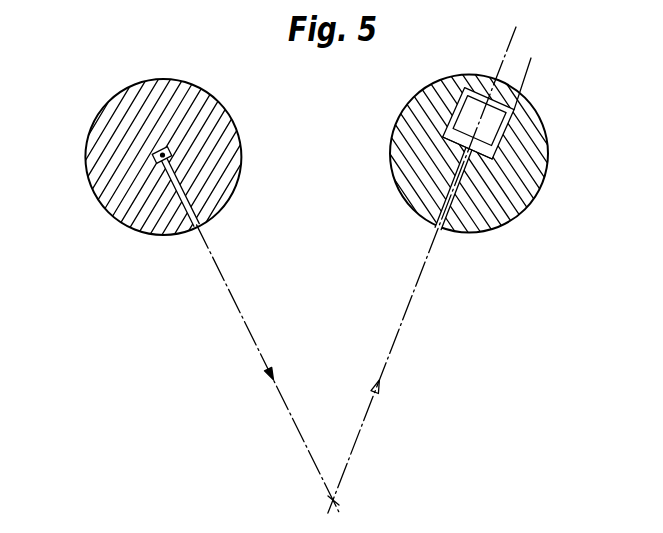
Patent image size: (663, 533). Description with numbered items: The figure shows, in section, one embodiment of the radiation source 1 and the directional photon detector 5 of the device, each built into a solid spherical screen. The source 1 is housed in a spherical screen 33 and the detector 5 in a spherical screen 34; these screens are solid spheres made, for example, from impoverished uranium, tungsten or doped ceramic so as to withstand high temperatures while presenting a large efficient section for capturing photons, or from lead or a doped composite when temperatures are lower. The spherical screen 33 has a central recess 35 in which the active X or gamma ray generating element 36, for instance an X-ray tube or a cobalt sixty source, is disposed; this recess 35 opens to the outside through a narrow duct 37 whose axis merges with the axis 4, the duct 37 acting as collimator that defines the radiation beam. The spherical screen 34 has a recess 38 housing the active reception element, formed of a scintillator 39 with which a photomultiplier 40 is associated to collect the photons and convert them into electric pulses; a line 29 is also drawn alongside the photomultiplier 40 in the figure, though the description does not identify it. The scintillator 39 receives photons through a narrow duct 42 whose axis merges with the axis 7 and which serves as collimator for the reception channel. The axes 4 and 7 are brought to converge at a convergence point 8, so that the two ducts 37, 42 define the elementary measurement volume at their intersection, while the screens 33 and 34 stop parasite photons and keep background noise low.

The radiation source 1 is at (85, 168).
The axis 4 is at (282, 400).
The directional photon detector 5 is at (550, 145).
The axis 7 is at (394, 347).
The convergence point 8 is at (334, 497).
The longitudinal axis line 29 is at (529, 67).
The spherical screen 33 is at (113, 204).
The spherical screen 34 is at (523, 200).
The central recess 35 is at (171, 148).
The active X or gamma ray generating element 36 is at (162, 151).
The narrow duct 37 is at (186, 192).
The recess 38 is at (467, 85).
The scintillator 39 is at (444, 137).
The photomultiplier 40 is at (476, 112).
The narrow duct 42 is at (441, 213).